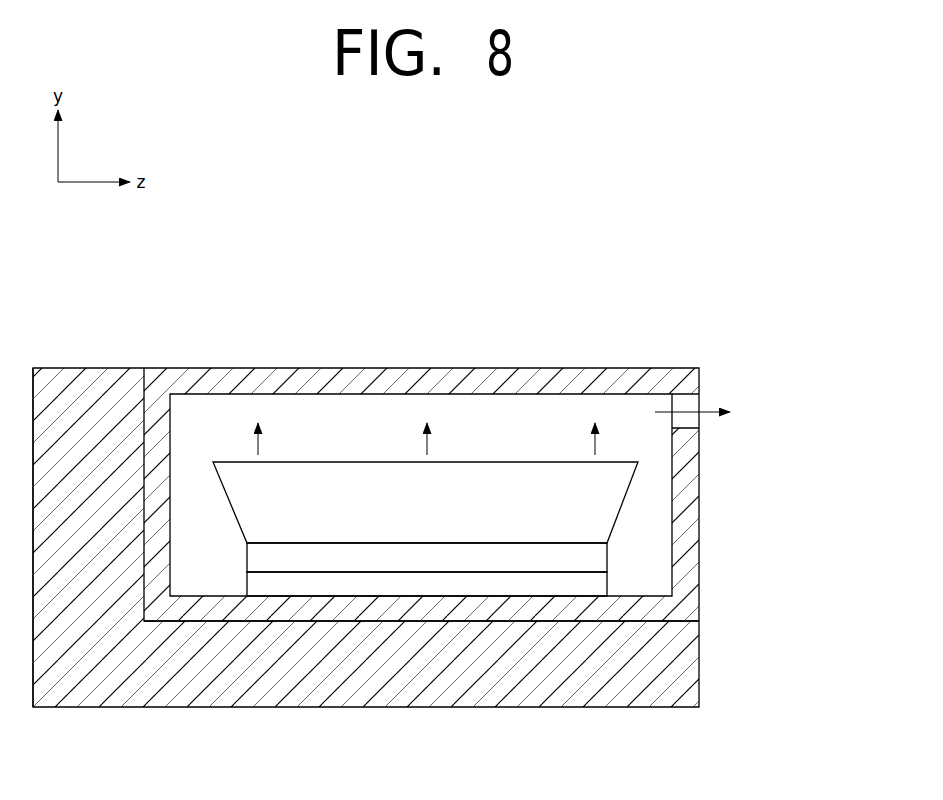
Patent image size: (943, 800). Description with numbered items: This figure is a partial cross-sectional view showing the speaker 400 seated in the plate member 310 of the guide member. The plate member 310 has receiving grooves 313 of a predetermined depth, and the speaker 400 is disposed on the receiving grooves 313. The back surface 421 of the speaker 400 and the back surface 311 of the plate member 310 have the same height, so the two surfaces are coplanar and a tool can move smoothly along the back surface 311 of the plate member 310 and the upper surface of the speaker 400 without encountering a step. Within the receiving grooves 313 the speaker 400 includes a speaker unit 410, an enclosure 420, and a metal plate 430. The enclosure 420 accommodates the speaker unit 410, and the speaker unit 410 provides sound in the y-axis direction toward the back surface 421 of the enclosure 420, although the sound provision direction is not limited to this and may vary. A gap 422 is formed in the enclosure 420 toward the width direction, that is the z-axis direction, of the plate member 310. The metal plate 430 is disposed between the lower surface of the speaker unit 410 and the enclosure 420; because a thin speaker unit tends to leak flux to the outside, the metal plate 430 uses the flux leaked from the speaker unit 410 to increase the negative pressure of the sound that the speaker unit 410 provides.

The plate member 310 is at (495, 690).
The back surface of the plate member 311 is at (109, 366).
The receiving grooves 313 is at (340, 626).
The speaker 400 is at (527, 509).
The speaker unit 410 is at (615, 488).
The enclosure 420 is at (620, 520).
The metal plate 430 is at (597, 583).
The back surface of the speaker 421 is at (249, 366).
The gap 422 is at (702, 404).